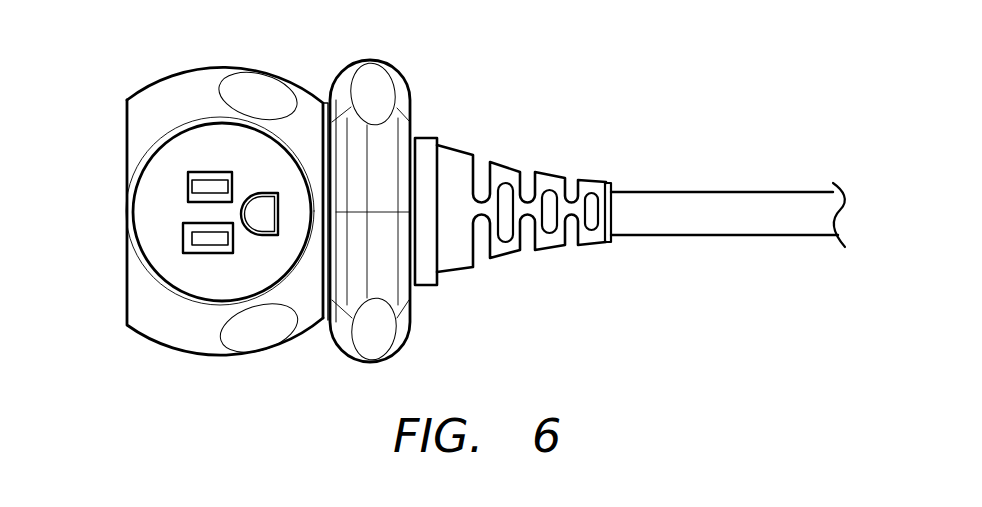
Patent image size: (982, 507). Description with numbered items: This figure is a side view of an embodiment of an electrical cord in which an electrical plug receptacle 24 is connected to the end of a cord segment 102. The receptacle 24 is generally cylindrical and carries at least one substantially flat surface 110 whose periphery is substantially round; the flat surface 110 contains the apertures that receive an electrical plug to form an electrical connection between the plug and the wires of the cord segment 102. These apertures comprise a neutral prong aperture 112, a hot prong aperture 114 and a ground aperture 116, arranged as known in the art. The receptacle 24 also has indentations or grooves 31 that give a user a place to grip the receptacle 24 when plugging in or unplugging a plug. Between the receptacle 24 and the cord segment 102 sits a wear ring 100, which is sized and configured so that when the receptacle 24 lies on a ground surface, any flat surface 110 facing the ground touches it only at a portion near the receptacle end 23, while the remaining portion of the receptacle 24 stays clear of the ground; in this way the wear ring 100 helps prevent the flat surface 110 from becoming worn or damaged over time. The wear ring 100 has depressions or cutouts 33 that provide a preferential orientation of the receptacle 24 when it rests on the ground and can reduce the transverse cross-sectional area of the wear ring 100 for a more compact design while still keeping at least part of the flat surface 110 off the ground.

The receptacle end 23 is at (127, 272).
The electrical plug receptacle 24 is at (168, 78).
The grooves 31 is at (252, 97).
The cutouts 33 is at (368, 332).
The wear ring 100 is at (396, 58).
The cord segment 102 is at (732, 202).
The flat surface 110 is at (200, 142).
The neutral prong aperture 112 is at (195, 234).
The hot prong aperture 114 is at (197, 184).
The ground aperture 116 is at (260, 220).